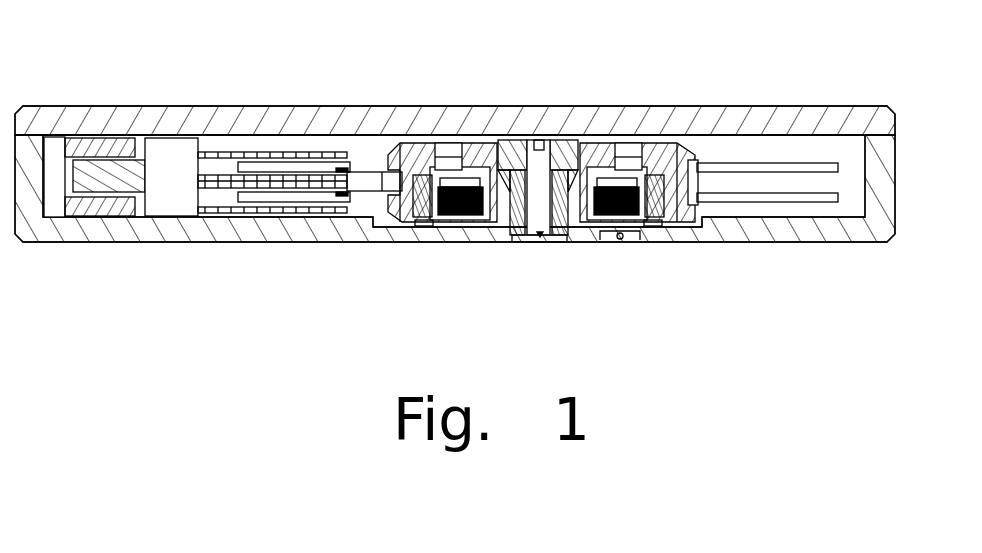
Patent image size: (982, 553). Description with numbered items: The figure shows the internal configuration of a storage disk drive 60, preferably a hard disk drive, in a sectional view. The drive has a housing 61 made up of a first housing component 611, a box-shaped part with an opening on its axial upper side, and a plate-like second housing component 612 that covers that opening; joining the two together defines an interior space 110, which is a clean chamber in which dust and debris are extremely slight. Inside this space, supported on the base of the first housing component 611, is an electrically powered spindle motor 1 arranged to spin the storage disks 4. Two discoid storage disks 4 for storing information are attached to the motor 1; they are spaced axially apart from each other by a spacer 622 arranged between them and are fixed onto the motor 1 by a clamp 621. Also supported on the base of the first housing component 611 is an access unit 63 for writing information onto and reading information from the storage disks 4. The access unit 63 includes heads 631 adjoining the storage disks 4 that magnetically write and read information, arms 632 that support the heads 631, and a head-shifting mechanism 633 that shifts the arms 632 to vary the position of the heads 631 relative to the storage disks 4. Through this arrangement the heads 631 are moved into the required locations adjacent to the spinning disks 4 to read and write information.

The spindle motor 1 is at (554, 140).
The storage disk 4 is at (765, 197).
The storage disk drive 60 is at (462, 203).
The housing 61 is at (462, 192).
The first housing component 611 is at (455, 232).
The second housing component 612 is at (462, 75).
The interior space 110 is at (454, 129).
The clamp 621 is at (642, 141).
The spacer 622 is at (717, 108).
The access unit 63 is at (270, 218).
The head 631 is at (320, 187).
The arm 632 is at (272, 187).
The head-shifting mechanism 633 is at (152, 227).